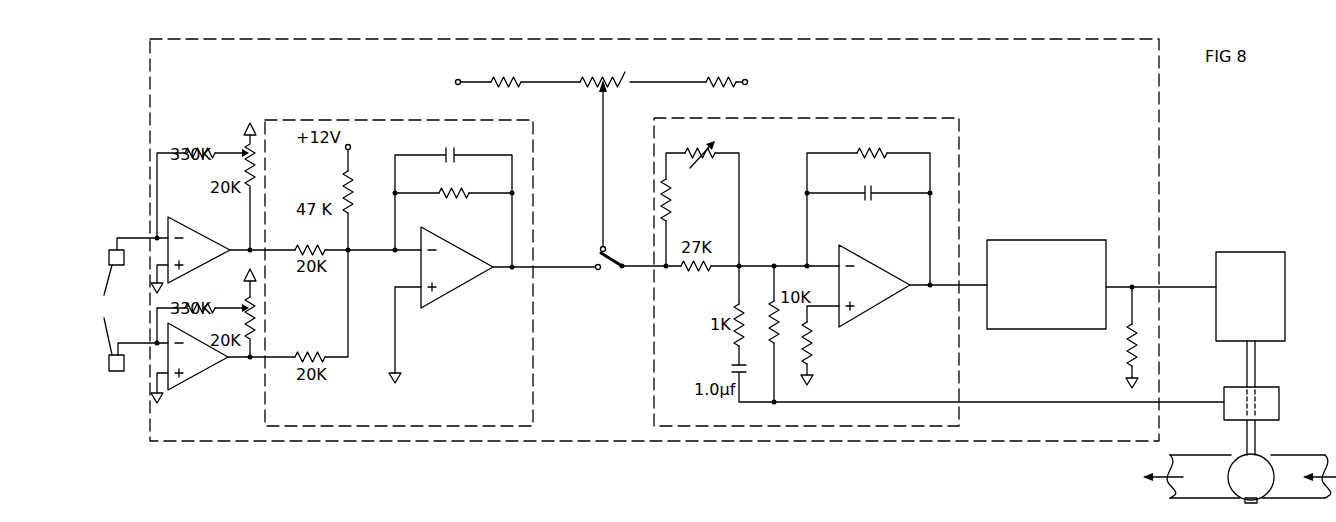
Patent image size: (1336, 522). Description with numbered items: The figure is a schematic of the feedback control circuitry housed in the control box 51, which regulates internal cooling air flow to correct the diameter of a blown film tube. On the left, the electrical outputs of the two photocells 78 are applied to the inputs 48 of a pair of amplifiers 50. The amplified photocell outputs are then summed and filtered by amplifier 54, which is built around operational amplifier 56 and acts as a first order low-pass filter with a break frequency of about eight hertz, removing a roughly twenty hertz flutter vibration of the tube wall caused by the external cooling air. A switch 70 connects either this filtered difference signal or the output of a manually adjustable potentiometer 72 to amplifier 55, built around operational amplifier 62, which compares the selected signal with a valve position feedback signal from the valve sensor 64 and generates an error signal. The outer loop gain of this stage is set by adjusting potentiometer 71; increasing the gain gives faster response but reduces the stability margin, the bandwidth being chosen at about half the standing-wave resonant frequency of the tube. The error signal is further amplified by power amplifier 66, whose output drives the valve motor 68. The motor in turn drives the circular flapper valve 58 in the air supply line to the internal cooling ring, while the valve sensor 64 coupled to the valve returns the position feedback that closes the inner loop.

The inputs 48 is at (138, 236).
The photocells 78 is at (99, 310).
The amplifiers 50 is at (208, 237).
The amplifier 54 is at (258, 119).
The operational amplifier 56 is at (477, 281).
The manually adjustable potentiometer 72 is at (600, 151).
The switch 70 is at (613, 254).
The potentiometer 71 is at (702, 156).
The amplifier 55 is at (959, 119).
The operational amplifier 62 is at (885, 302).
The power amplifier 66 is at (1043, 240).
The control box 51 is at (1160, 116).
The valve motor 68 is at (1246, 251).
The valve sensor 64 is at (1264, 391).
The circular flapper valve 58 is at (1260, 472).